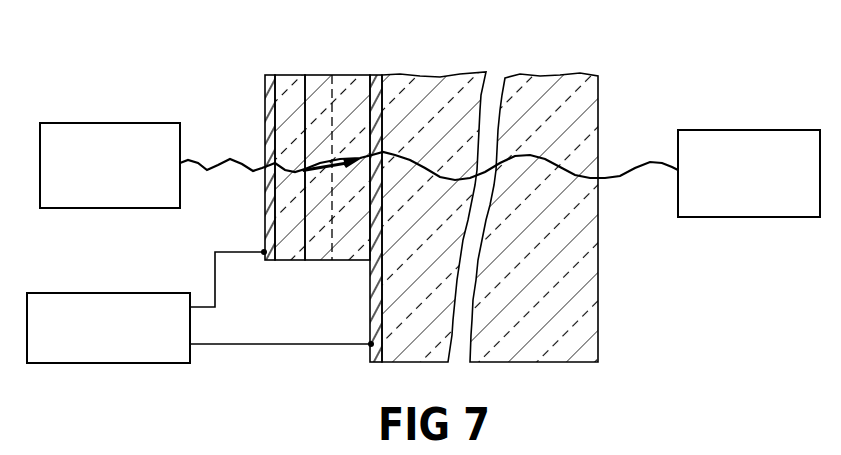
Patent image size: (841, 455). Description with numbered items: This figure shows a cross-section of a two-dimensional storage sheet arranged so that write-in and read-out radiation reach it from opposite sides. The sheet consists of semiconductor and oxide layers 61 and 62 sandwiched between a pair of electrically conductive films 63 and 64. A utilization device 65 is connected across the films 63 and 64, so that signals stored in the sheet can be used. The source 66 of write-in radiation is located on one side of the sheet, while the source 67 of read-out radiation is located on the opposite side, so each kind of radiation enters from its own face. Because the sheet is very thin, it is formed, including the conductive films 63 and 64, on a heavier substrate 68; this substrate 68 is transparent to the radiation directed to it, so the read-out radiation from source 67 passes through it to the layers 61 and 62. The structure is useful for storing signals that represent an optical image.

The semiconductor layer 61 is at (372, 62).
The oxide layer 62 is at (287, 78).
The electrically conductive film 63 is at (267, 78).
The electrically conductive film 64 is at (373, 75).
The utilization device 65 is at (75, 363).
The source of write-in radiation 66 is at (113, 123).
The source of read-out radiation 67 is at (722, 130).
The substrate 68 is at (598, 355).